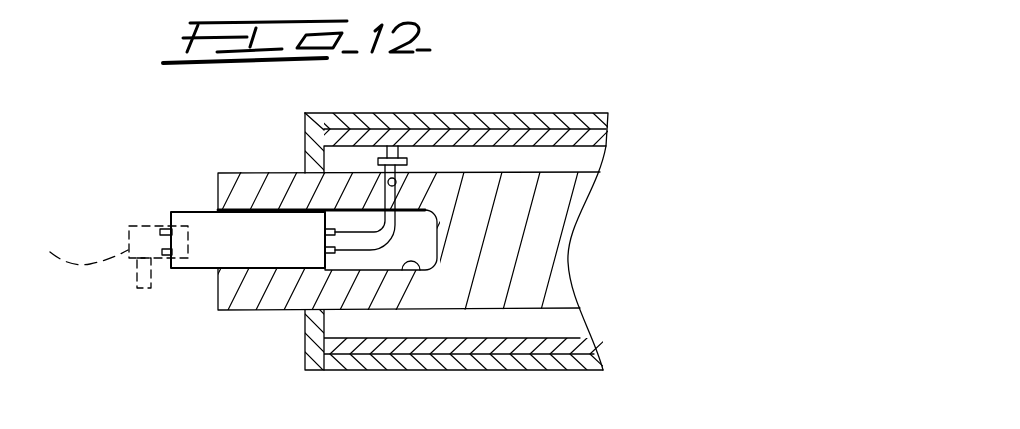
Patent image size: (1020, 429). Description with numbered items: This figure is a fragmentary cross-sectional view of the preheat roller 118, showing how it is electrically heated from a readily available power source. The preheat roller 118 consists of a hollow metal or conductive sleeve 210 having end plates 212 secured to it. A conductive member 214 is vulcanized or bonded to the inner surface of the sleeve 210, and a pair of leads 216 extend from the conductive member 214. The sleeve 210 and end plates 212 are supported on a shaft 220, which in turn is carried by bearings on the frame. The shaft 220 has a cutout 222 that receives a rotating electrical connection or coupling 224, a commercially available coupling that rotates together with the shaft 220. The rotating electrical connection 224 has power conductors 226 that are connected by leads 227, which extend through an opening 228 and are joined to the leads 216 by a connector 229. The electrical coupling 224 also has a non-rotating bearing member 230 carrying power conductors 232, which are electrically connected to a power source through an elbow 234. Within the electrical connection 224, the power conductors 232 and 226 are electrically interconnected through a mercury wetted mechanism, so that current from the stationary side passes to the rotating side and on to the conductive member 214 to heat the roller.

The preheat roller 118 is at (297, 106).
The sleeve 210 is at (470, 113).
The end plates 212 is at (305, 133).
The conductive member 214 is at (602, 135).
The leads 216 is at (381, 157).
The shaft 220 is at (298, 308).
The cutout 222 is at (412, 262).
The rotating electrical connection 224 is at (204, 204).
The power conductors 226 is at (334, 274).
The leads 227 is at (372, 250).
The opening 228 is at (398, 177).
The connector 229 is at (395, 146).
The non-rotating bearing member 230 is at (185, 230).
The power conductors 232 is at (160, 232).
The elbow 234 is at (81, 244).